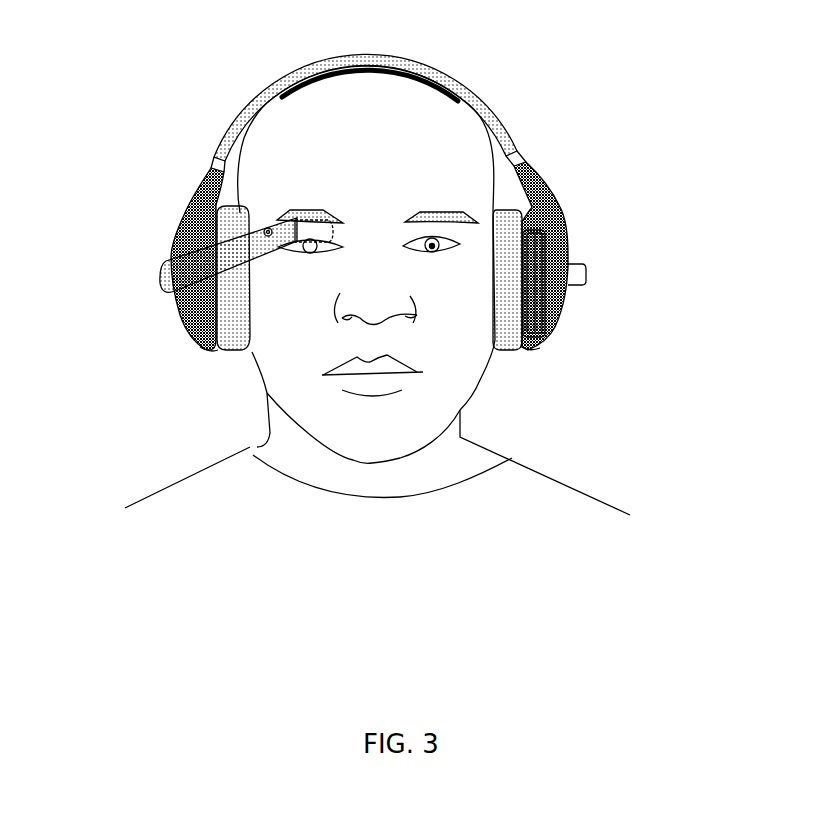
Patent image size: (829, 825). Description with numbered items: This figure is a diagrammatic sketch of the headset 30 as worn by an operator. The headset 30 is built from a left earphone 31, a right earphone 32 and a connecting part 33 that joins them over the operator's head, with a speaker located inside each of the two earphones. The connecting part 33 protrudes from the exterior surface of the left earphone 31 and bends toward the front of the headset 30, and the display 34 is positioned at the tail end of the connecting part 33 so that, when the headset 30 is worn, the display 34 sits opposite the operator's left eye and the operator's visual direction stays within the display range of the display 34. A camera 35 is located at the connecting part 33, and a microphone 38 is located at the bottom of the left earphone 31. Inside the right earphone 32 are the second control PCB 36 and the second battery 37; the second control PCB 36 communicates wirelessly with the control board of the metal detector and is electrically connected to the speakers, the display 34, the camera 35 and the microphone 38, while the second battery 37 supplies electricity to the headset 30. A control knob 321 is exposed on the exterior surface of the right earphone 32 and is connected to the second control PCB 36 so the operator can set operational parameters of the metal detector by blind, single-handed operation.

The headset 30 is at (524, 102).
The left earphone 31 is at (170, 237).
The right earphone 32 is at (570, 243).
The control knob 321 is at (585, 284).
The connecting part 33 is at (185, 205).
The display 34 is at (317, 232).
The camera 35 is at (180, 317).
The second control PCB 36 is at (558, 327).
The second battery 37 is at (540, 347).
The microphone 38 is at (215, 348).